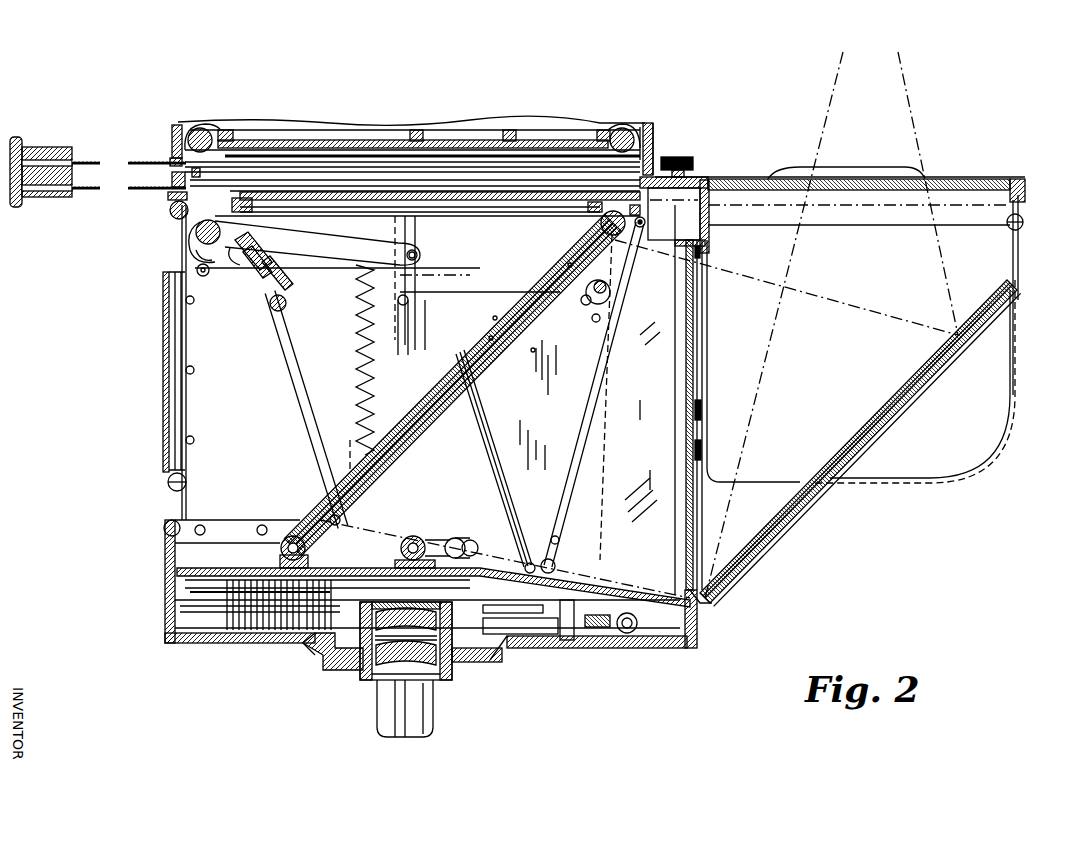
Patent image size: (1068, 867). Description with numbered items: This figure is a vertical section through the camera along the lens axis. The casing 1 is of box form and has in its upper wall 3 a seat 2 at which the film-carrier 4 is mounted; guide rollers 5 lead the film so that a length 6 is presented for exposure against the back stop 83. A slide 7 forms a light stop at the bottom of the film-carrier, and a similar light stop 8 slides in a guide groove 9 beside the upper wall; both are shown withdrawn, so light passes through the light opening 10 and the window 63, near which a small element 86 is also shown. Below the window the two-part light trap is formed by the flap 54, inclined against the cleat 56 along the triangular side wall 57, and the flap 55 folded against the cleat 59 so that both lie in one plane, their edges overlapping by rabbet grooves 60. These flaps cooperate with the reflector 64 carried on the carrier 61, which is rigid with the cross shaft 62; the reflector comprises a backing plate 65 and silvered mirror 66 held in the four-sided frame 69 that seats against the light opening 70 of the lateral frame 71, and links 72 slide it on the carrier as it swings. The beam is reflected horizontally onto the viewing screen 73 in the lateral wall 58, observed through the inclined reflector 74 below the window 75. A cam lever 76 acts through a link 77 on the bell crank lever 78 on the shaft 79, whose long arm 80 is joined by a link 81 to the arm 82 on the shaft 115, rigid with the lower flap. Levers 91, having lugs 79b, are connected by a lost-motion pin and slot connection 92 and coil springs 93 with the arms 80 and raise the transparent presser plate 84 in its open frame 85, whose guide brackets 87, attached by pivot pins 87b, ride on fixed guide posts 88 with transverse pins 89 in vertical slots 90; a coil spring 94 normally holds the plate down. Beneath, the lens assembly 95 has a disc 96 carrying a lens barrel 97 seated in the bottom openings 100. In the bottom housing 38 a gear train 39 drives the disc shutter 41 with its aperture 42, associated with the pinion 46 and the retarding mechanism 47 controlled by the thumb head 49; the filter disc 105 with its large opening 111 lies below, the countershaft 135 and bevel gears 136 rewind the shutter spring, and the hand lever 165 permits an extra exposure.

The casing 1 is at (180, 217).
The seat 2 is at (556, 178).
The upper wall 3 is at (668, 150).
The film-carrier 4 is at (654, 125).
The guide rollers 5 is at (210, 128).
The film field 6 is at (440, 142).
The slide 7 is at (152, 158).
The light stop 8 is at (128, 195).
The guide groove 9 is at (296, 197).
The light opening 10 is at (235, 188).
The bottom housing 38 is at (165, 610).
The gear train 39 is at (485, 575).
The shutter 41 is at (218, 600).
The aperture 42 is at (312, 600).
The pinion 46 is at (405, 540).
The retarding mechanism 47 is at (570, 610).
The thumb head 49 is at (700, 165).
The flap 54 is at (565, 262).
The flap 55 is at (355, 450).
The cleat 56 is at (493, 316).
The side wall 57 is at (562, 408).
The lateral wall 58 is at (712, 222).
The cleat 59 is at (325, 498).
The rabbet grooves 60 is at (489, 338).
The carrier 61 is at (582, 290).
The cross shaft 62 is at (615, 282).
The light window 63 is at (487, 187).
The reflector 64 is at (492, 384).
The backing plate 65 is at (548, 316).
The mirror 66 is at (535, 352).
The frame 69 is at (582, 303).
The light opening 70 is at (582, 427).
The lateral frame 71 is at (647, 220).
The link 72 is at (498, 478).
The viewing screen 73 is at (705, 352).
The inclined reflector 74 is at (878, 420).
The window 75 is at (955, 183).
The cam lever 76 is at (646, 226).
The link 77 is at (480, 292).
The lever 78 is at (240, 292).
The shaft 79 is at (196, 236).
The lugs 79b is at (196, 248).
The long arm 80 is at (278, 312).
The link 81 is at (300, 412).
The arm 82 is at (330, 560).
The back stop 83 is at (345, 135).
The presser plate 84 is at (478, 212).
The open frame 85 is at (586, 225).
The block 86 is at (252, 210).
The guide brackets 87 is at (420, 270).
The pivot pins 87b is at (426, 255).
The guide posts 88 is at (418, 238).
The transverse pins 89 is at (396, 330).
The vertical slots 90 is at (420, 340).
The levers 91 is at (350, 248).
The pin and slot connection 92 is at (255, 280).
The coil springs 93 is at (290, 293).
The coil spring 94 is at (358, 345).
The lens assembly 95 is at (397, 680).
The disc 96 is at (322, 670).
The lens barrel 97 is at (453, 682).
The bottom openings 100 is at (498, 663).
The filter disc 105 is at (214, 591).
The large opening 111 is at (266, 619).
The shaft 115 is at (280, 550).
The countershaft 135 is at (462, 534).
The bevel gears 136 is at (425, 532).
The hand lever 165 is at (838, 178).